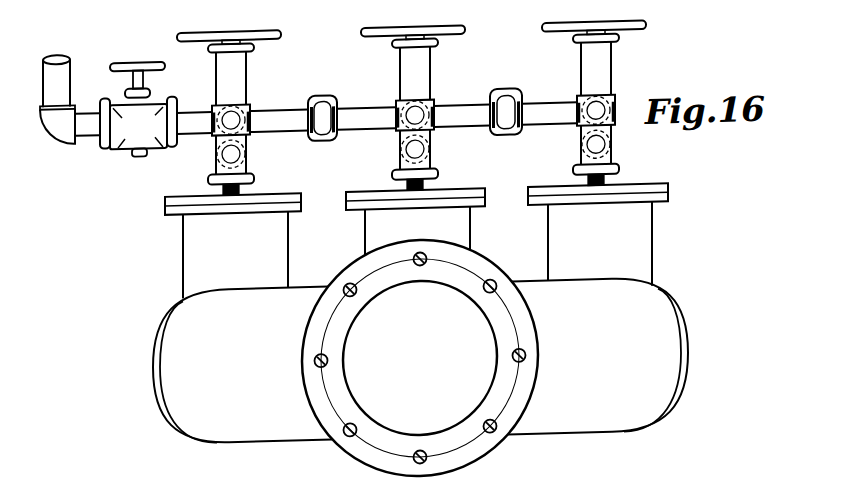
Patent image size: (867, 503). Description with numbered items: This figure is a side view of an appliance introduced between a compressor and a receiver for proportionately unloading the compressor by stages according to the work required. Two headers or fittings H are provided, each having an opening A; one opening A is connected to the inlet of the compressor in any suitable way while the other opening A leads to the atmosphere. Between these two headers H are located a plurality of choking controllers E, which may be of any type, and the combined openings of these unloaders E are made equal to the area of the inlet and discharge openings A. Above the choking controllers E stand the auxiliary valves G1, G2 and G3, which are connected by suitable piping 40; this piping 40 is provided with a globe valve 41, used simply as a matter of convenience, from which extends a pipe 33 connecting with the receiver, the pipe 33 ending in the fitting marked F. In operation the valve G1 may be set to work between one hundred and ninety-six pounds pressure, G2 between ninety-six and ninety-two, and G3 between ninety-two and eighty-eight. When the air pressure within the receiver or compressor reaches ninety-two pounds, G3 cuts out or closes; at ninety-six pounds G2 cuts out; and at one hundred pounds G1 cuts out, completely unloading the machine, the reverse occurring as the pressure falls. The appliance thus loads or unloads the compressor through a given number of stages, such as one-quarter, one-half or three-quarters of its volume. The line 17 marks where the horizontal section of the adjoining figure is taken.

The inlet pipe F is at (56, 46).
The pipe 33 is at (58, 132).
The globe valve 41 is at (128, 143).
The piping 40 is at (377, 116).
The auxiliary valve G3 is at (229, 113).
The auxiliary valve G2 is at (413, 108).
The auxiliary valve G1 is at (594, 103).
The choking controller E is at (416, 241).
The header H is at (420, 360).
The section line 17 is at (150, 362).
The opening A is at (420, 358).